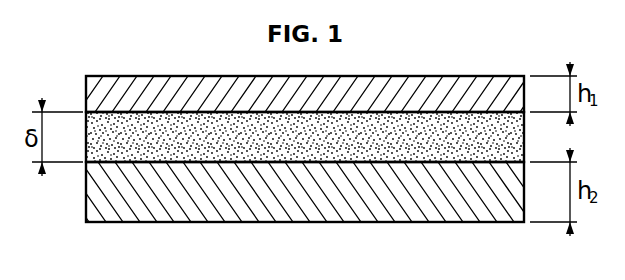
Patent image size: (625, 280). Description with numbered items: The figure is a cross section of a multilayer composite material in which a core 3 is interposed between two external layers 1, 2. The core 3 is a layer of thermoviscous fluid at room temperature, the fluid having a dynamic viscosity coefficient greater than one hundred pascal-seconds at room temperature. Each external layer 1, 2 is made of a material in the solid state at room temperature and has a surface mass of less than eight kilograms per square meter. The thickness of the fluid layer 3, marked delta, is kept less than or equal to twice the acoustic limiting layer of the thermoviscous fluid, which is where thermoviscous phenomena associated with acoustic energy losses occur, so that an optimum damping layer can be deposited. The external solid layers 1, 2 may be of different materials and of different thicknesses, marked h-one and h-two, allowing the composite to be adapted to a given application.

The external layer 1 is at (172, 82).
The external layer 2 is at (305, 192).
The core 3 is at (460, 137).